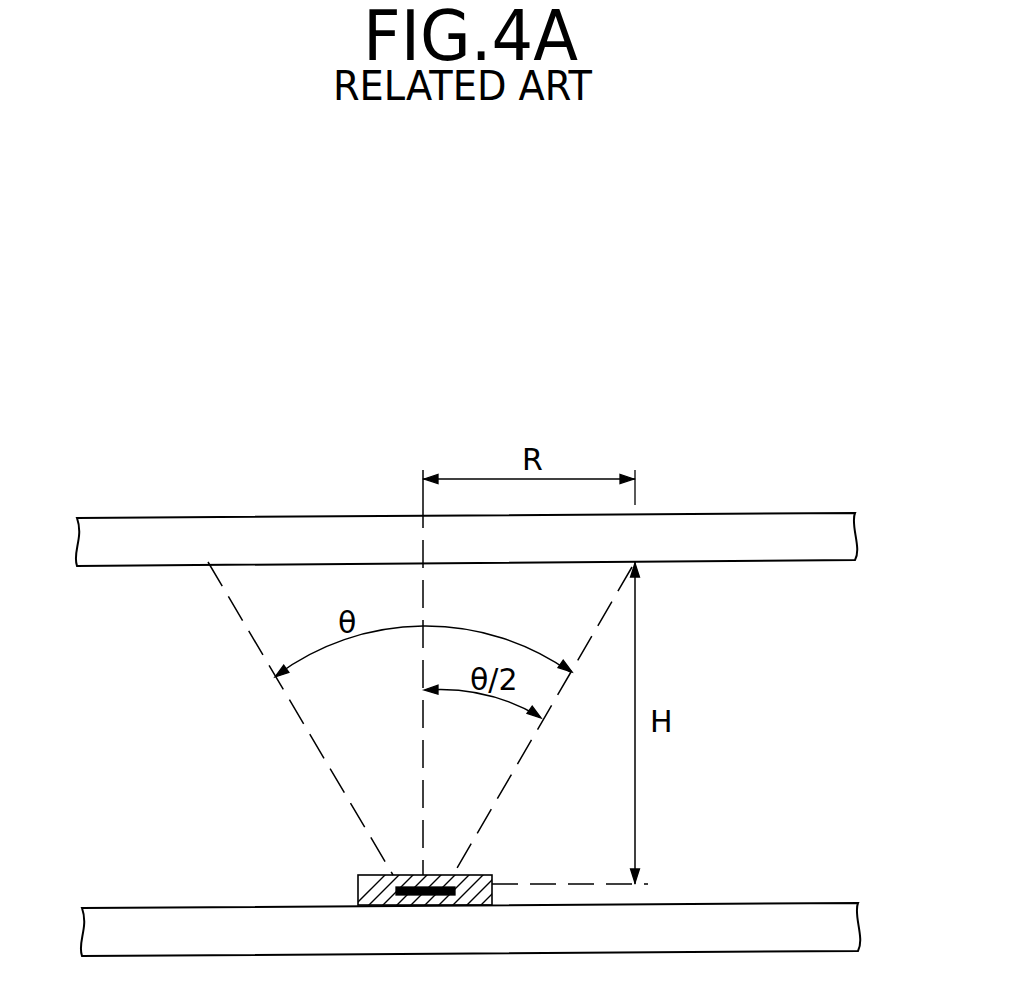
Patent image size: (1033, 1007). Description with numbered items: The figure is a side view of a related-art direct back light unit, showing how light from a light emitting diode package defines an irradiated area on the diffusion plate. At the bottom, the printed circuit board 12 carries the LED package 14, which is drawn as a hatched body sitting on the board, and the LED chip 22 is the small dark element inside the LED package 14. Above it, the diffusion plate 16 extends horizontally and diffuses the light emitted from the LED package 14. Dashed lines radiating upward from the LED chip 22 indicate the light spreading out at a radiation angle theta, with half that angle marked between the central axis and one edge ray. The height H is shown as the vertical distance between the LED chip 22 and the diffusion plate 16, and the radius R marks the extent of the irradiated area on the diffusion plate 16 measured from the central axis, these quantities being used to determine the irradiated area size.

The printed circuit board 12 is at (858, 928).
The LED package 14 is at (358, 891).
The diffusion plate 16 is at (855, 537).
The LED chip 22 is at (450, 895).